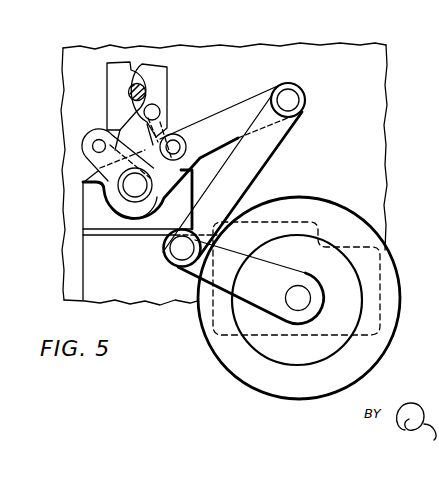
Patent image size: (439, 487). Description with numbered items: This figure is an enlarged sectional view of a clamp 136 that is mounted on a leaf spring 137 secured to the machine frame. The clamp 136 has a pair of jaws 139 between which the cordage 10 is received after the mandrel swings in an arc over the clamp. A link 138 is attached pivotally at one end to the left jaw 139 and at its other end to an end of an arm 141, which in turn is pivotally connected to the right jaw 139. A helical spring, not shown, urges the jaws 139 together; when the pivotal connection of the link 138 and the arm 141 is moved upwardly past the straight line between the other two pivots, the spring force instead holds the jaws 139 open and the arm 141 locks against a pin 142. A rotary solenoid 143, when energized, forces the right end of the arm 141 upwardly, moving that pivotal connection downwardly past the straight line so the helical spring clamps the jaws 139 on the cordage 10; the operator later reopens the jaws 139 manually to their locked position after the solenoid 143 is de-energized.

The cordage 10 is at (140, 87).
The clamp 136 is at (264, 63).
The leaf spring 137 is at (90, 273).
The link 138 is at (86, 153).
The jaws 139 is at (122, 65).
The arm 141 is at (268, 84).
The pin 142 is at (157, 109).
The rotary solenoid 143 is at (383, 280).